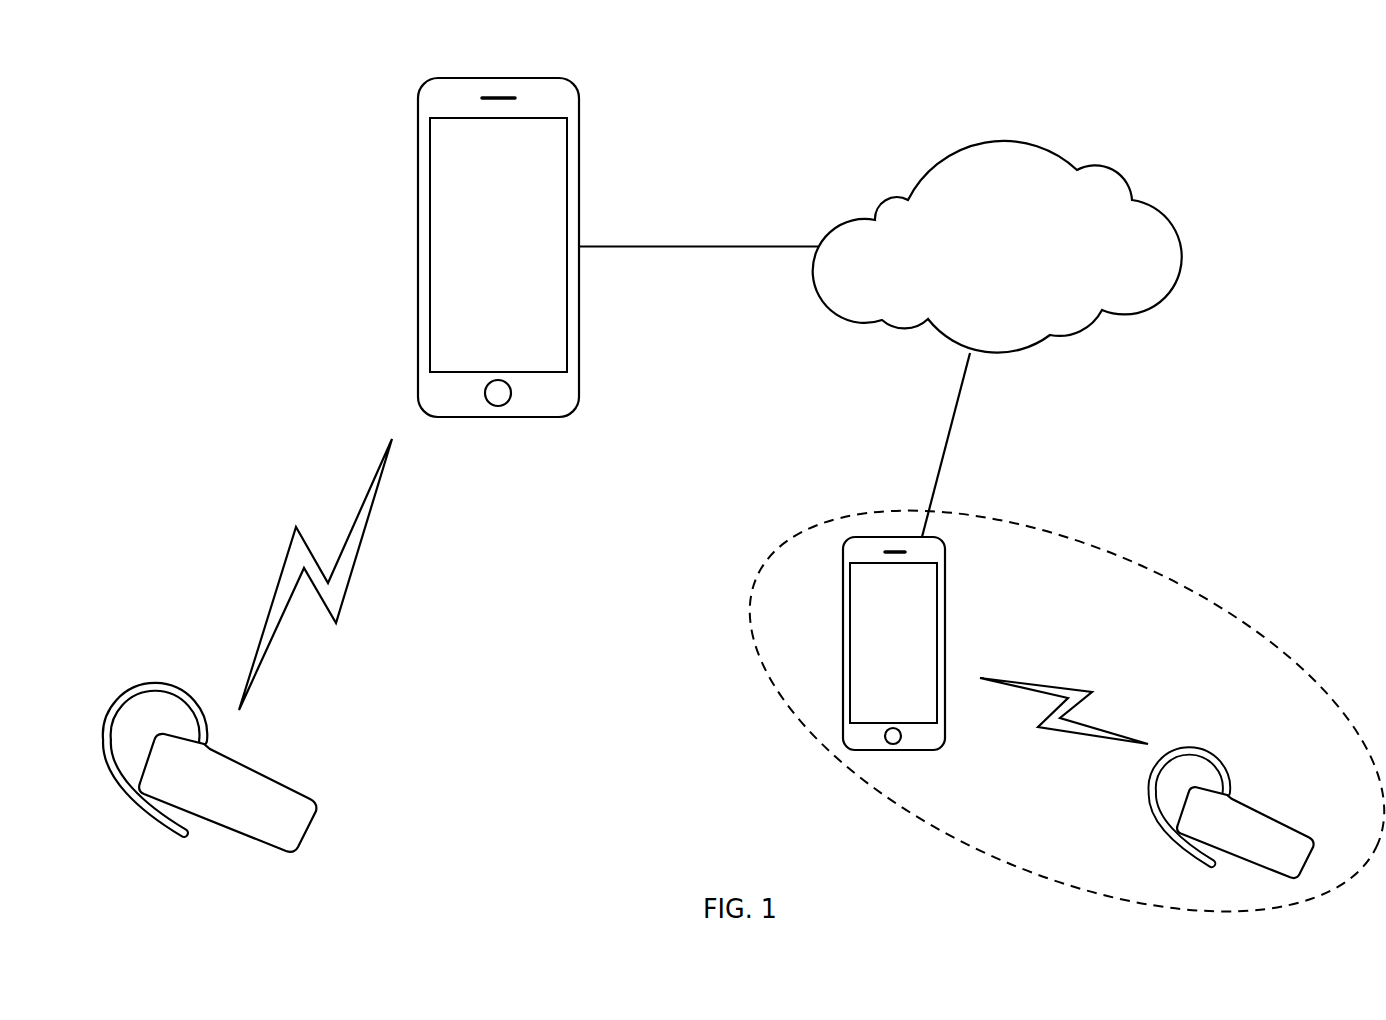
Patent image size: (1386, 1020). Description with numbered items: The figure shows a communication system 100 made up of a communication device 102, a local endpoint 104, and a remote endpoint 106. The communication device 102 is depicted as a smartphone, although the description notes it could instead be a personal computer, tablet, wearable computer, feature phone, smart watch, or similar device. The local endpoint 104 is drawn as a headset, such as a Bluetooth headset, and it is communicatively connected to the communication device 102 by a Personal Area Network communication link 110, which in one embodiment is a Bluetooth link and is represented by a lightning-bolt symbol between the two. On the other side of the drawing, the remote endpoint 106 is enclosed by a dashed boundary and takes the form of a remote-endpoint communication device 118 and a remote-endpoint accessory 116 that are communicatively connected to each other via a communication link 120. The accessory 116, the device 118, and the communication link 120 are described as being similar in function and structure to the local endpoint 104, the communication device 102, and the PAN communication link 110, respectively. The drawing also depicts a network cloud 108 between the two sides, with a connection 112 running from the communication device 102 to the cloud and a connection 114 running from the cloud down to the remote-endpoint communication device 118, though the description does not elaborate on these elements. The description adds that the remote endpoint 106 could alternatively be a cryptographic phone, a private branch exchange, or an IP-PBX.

The communication system 100 is at (172, 153).
The communication device 102 is at (446, 77).
The local endpoint 104 is at (156, 683).
The remote endpoint 106 is at (1080, 538).
The network 108 is at (999, 143).
The Personal Area Network (PAN) communication link 110 is at (363, 537).
The network connection 112 is at (740, 246).
The network connection 114 is at (957, 407).
The remote-endpoint accessory 116 is at (1183, 748).
The remote-endpoint communication device 118 is at (947, 590).
The communication link 120 is at (1037, 727).